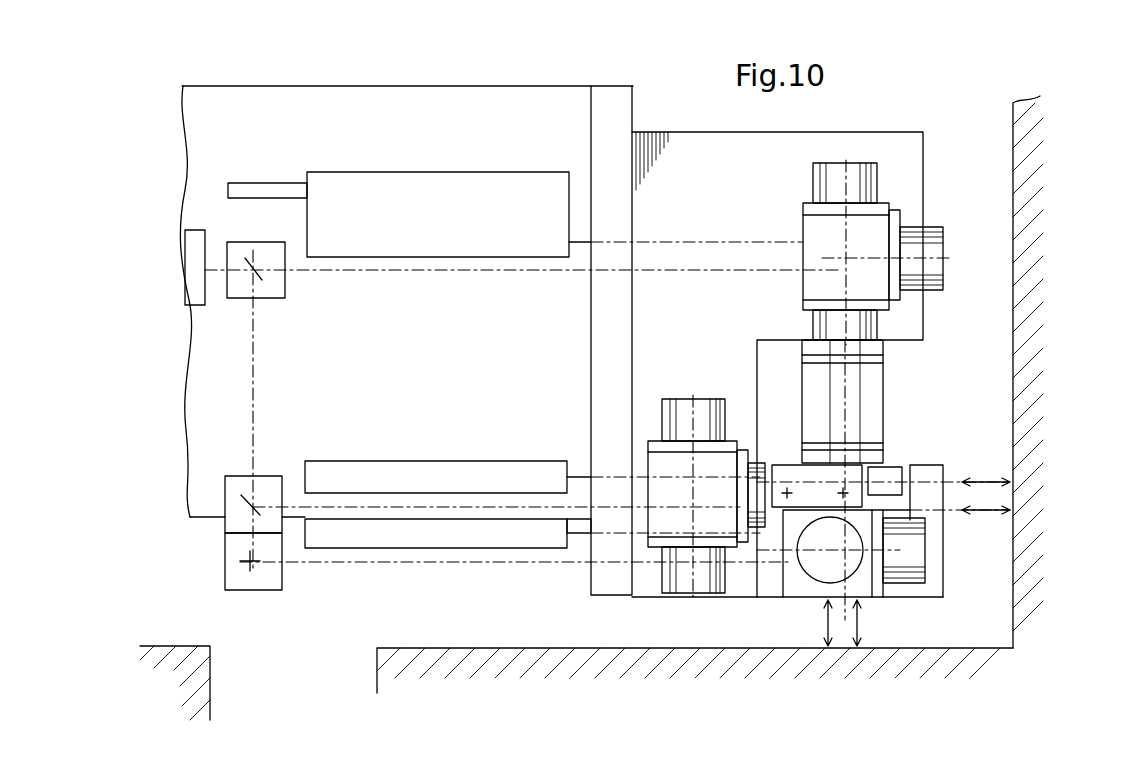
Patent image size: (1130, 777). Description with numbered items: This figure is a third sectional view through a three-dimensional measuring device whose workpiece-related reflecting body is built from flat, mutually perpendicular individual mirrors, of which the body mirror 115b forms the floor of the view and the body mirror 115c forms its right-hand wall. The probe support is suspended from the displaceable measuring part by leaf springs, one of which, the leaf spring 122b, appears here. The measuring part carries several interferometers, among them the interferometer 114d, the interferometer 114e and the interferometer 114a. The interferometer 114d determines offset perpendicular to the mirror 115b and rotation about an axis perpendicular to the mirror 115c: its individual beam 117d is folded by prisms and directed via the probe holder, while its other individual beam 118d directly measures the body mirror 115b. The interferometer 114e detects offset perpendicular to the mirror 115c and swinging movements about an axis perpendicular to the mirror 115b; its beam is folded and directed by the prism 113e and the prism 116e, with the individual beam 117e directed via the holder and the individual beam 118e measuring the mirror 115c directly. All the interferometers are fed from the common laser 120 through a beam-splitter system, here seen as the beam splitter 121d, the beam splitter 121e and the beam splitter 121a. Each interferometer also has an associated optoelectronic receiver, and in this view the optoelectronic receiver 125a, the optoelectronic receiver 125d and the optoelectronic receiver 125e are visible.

The laser 120 is at (192, 243).
The beam splitter 121d is at (273, 292).
The beam splitter 121e is at (265, 490).
The beam splitter 121a is at (270, 586).
The optoelectronic receiver 125d is at (398, 182).
The optoelectronic receiver 125e is at (440, 470).
The optoelectronic receiver 125a is at (432, 545).
The interferometer 114d is at (873, 243).
The interferometer 114e is at (657, 453).
The interferometer 114a is at (818, 568).
The leaf spring 122b is at (877, 385).
The prism 116e is at (893, 473).
The prism 113e is at (935, 473).
The individual beam 117e is at (990, 478).
The individual beam 118e is at (991, 513).
The individual beam 117d is at (827, 606).
The individual beam 118d is at (862, 625).
The individual mirror 115c is at (1004, 318).
The individual mirror 115b is at (588, 640).